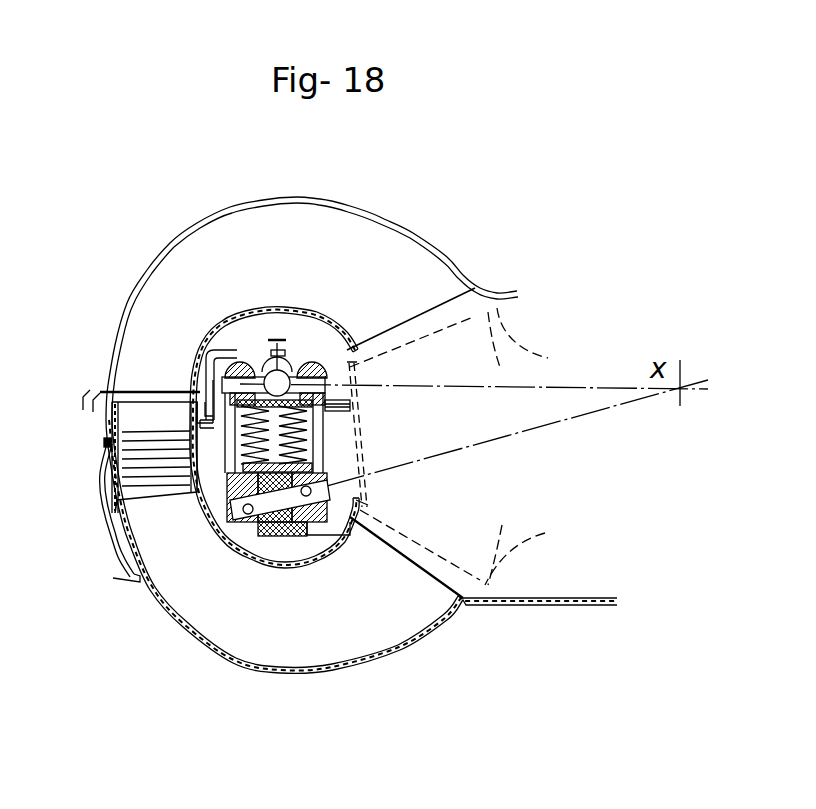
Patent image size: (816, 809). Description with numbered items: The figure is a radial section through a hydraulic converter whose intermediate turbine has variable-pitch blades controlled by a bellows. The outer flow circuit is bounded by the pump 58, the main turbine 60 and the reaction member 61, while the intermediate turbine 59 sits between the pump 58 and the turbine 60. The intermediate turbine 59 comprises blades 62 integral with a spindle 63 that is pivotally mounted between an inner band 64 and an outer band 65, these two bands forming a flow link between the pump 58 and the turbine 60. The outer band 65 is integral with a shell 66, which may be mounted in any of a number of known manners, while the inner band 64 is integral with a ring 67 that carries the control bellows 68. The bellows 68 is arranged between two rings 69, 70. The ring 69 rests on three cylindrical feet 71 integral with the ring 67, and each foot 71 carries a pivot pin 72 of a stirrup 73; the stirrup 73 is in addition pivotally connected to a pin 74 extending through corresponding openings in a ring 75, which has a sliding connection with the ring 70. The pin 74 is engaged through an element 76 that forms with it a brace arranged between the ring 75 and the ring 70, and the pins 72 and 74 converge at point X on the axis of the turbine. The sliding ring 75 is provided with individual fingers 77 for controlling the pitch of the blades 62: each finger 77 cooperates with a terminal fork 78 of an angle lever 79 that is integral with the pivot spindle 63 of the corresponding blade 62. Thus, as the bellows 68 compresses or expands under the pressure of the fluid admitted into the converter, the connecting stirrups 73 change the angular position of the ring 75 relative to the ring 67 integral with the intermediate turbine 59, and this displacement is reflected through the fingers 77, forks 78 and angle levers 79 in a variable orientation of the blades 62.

The pump 58 is at (390, 220).
The intermediate turbine 59 is at (103, 453).
The main turbine 60 is at (293, 680).
The reaction member 61 is at (462, 320).
The blades 62 is at (133, 423).
The spindle 63 is at (193, 385).
The inner band 64 is at (187, 437).
The outer band 65 is at (105, 427).
The shell 66 is at (105, 537).
The ring 67 is at (215, 520).
The control bellows 68 is at (313, 425).
The ring 69 is at (315, 462).
The ring 70 is at (335, 335).
The cylindrical feet 71 is at (283, 533).
The pivot pin 72 is at (270, 520).
The stirrup 73 is at (328, 445).
The pin 74 is at (345, 378).
The ring 75 is at (313, 357).
The element 76 is at (243, 367).
The fingers 77 is at (277, 352).
The terminal fork 78 is at (263, 357).
The angle lever 79 is at (207, 350).